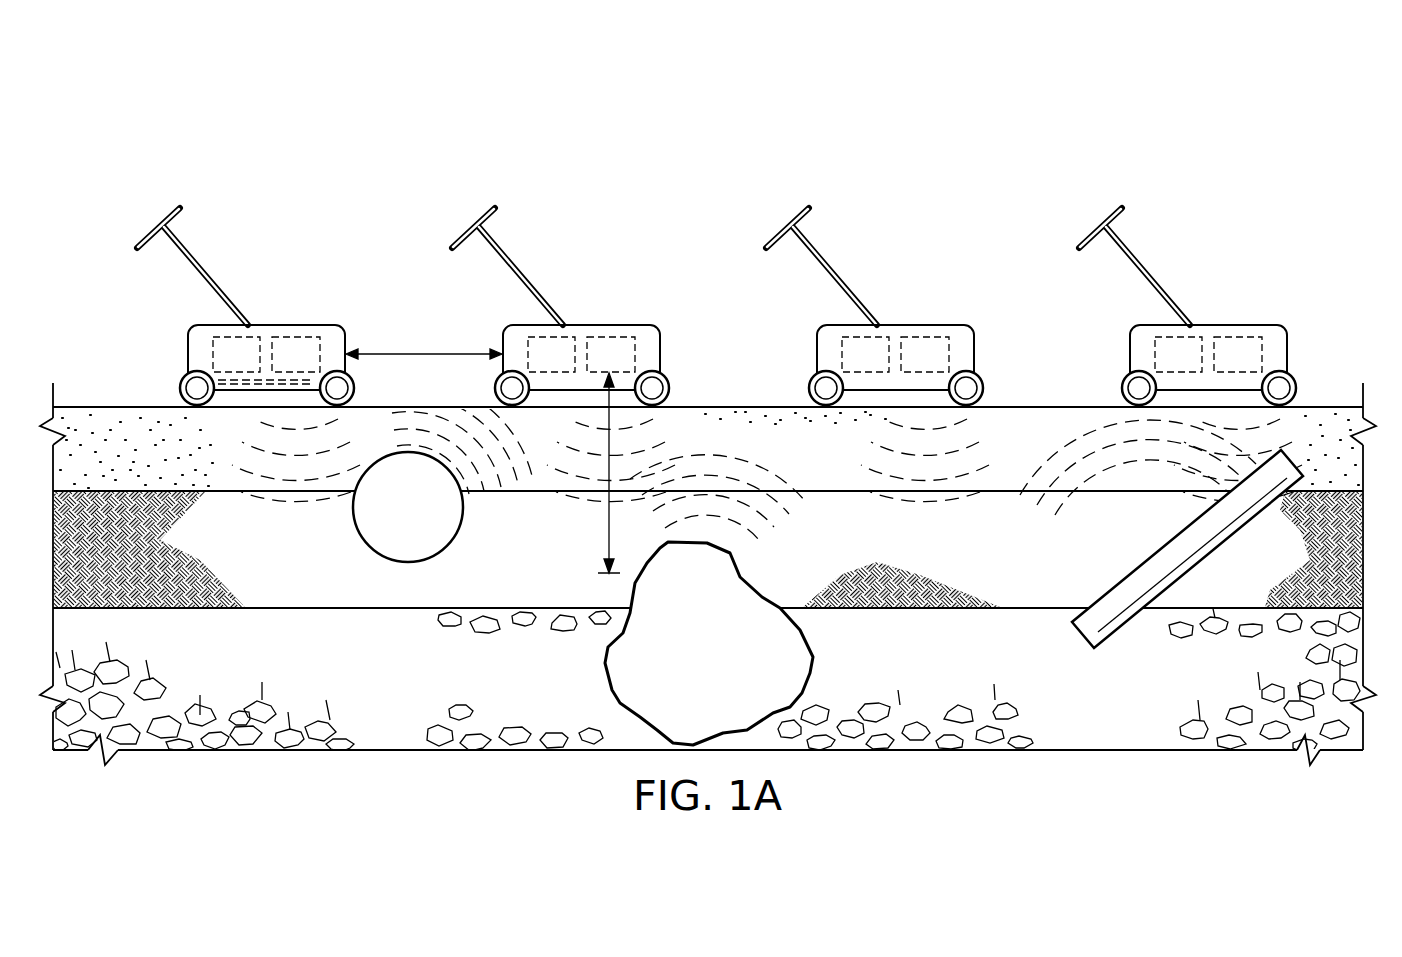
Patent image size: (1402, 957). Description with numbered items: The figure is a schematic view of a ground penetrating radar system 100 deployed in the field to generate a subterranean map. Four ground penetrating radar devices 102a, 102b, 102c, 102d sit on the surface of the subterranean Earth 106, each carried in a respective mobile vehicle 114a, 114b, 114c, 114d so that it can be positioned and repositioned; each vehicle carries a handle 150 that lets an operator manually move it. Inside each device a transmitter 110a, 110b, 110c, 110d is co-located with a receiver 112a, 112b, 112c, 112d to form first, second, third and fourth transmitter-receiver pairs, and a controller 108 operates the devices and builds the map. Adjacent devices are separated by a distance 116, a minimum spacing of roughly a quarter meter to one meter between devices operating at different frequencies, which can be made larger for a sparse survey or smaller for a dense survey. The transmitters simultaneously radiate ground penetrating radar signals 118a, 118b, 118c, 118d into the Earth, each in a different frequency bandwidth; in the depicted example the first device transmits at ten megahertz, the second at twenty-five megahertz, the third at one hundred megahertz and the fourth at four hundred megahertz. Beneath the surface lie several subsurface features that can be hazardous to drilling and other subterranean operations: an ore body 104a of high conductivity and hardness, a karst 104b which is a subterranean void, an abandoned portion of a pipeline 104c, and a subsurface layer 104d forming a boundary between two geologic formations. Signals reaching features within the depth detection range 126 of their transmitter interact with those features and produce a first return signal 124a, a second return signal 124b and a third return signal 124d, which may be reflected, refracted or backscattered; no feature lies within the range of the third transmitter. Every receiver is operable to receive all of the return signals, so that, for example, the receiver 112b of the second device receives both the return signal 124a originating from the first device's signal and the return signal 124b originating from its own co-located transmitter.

The ground penetrating radar system 100 is at (1262, 146).
The ground penetrating radar device 102a is at (222, 343).
The ground penetrating radar device 102b is at (564, 309).
The ground penetrating radar device 102c is at (877, 309).
The ground penetrating radar device 102d is at (1190, 309).
The subsurface feature 104a is at (375, 557).
The subsurface feature 104b is at (606, 665).
The subsurface feature 104c is at (1240, 527).
The subsurface feature 104d is at (180, 608).
The subterranean Earth 106 is at (708, 574).
The controller 108 is at (237, 390).
The transmitter 110a is at (331, 353).
The transmitter 110b is at (636, 352).
The transmitter 110c is at (950, 352).
The transmitter 110d is at (1262, 352).
The receiver 112a is at (213, 352).
The receiver 112b is at (528, 352).
The receiver 112c is at (842, 352).
The receiver 112d is at (1155, 352).
The vehicle 114a is at (186, 363).
The vehicle 114b is at (501, 363).
The vehicle 114c is at (815, 363).
The vehicle 114d is at (1128, 363).
The distance 116 is at (421, 352).
The ground penetrating radar signal 118a is at (247, 497).
The ground penetrating radar signal 118b is at (632, 504).
The ground penetrating radar signal 118c is at (952, 500).
The ground penetrating radar signal 118d is at (1287, 440).
The first return signal 124a is at (492, 515).
The second return signal 124b is at (798, 510).
The third return signal 124d is at (1118, 500).
The depth detection range 126 is at (608, 542).
The handle 150 is at (1136, 259).